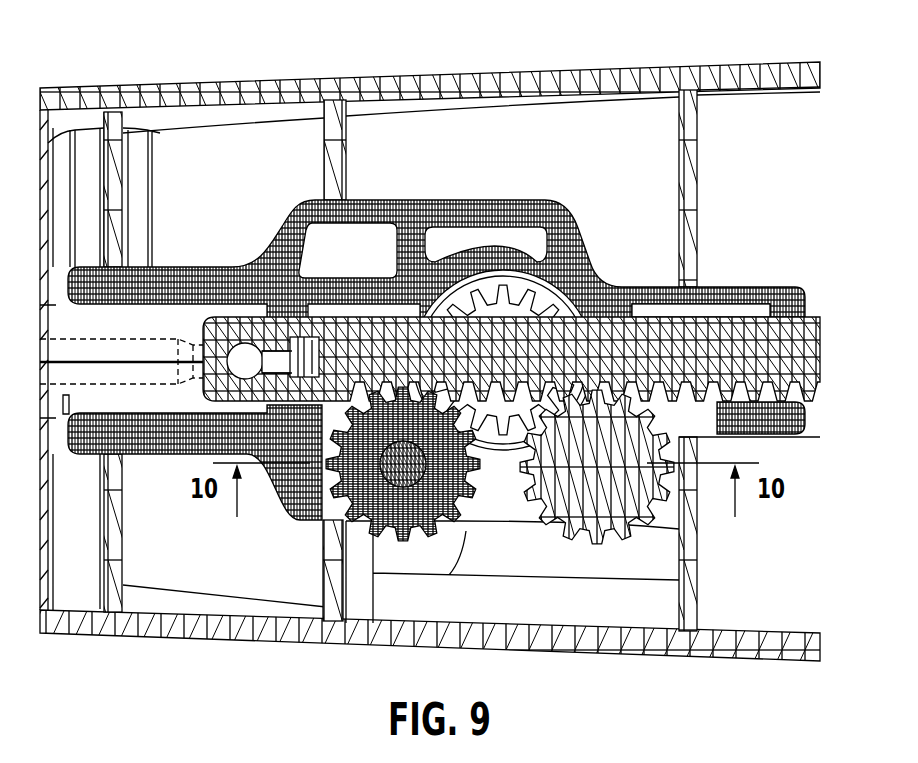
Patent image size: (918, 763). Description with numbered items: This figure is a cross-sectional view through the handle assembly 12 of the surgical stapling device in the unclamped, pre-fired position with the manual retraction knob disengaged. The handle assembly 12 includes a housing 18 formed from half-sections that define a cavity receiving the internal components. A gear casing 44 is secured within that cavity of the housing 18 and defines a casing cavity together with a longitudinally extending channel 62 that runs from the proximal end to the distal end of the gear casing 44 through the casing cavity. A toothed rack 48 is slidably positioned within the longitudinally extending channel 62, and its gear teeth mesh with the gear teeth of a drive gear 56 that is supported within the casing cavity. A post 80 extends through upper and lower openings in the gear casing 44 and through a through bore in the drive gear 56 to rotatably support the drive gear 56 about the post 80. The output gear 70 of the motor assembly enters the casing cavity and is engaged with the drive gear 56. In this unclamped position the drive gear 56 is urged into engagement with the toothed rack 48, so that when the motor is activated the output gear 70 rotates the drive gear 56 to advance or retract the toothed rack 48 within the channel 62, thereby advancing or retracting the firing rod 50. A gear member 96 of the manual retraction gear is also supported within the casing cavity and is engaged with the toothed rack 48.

The handle assembly 12 is at (355, 59).
The housing 18 is at (458, 76).
The gear casing 44 is at (597, 262).
The toothed rack 48 is at (776, 318).
The firing rod 50 is at (83, 384).
The drive gear 56 is at (383, 522).
The longitudinally extending channel 62 is at (641, 332).
The output gear 70 is at (508, 288).
The post 80 is at (403, 466).
The gear member 96 is at (600, 510).